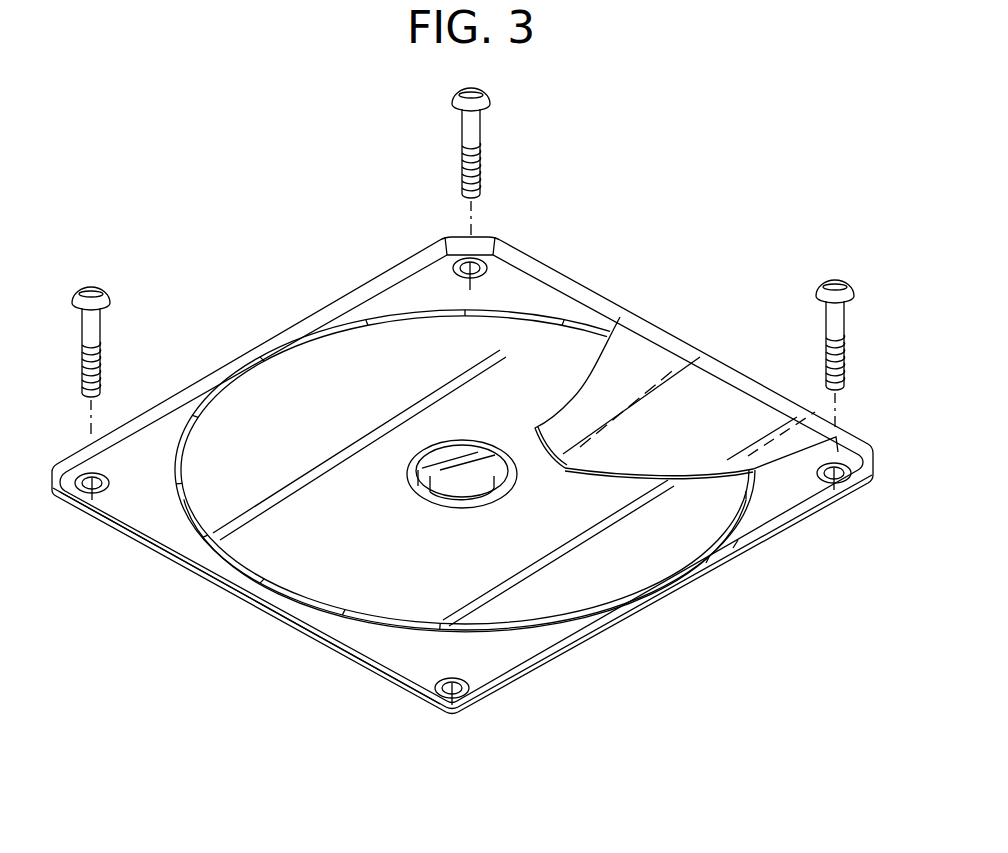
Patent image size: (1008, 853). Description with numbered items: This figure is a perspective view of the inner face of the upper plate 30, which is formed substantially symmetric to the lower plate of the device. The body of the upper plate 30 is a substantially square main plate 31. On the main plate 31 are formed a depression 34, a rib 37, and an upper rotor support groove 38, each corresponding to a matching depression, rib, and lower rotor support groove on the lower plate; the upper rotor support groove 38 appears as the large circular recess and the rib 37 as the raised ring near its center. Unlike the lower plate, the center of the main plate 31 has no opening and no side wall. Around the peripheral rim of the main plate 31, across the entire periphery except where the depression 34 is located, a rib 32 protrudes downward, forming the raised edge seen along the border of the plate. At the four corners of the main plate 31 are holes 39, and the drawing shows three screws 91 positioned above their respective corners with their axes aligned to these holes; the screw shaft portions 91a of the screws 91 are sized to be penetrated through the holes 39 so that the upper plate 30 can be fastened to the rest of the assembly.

The upper plate 30 is at (596, 280).
The main plate 31 is at (517, 655).
The rib 32 is at (326, 636).
The depression 34 is at (712, 372).
The rib 37 is at (462, 508).
The upper rotor support groove 38 is at (183, 490).
The holes 39 is at (466, 280).
The screws 91 is at (467, 95).
The screw shaft portions 91a is at (466, 157).